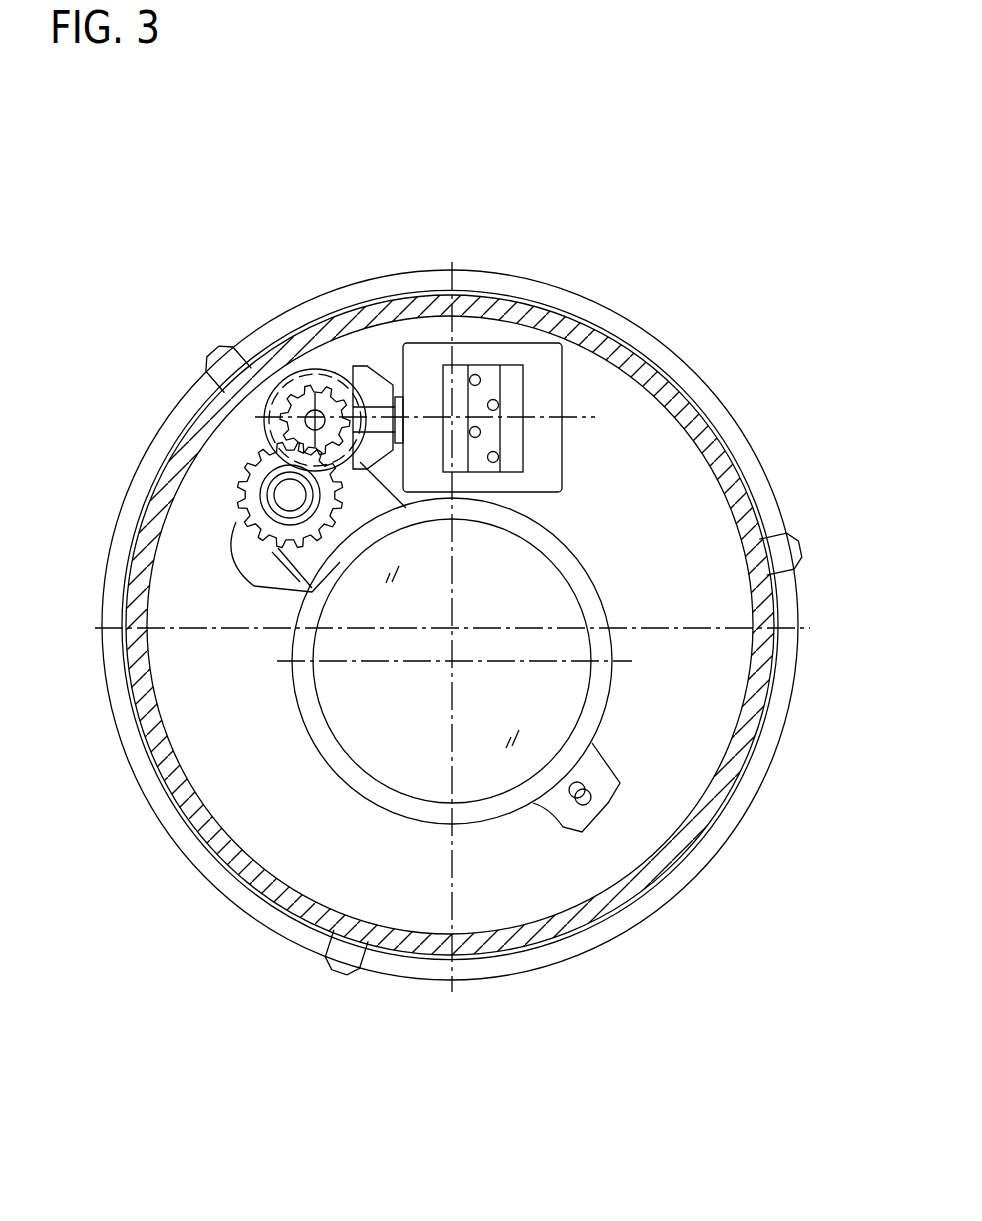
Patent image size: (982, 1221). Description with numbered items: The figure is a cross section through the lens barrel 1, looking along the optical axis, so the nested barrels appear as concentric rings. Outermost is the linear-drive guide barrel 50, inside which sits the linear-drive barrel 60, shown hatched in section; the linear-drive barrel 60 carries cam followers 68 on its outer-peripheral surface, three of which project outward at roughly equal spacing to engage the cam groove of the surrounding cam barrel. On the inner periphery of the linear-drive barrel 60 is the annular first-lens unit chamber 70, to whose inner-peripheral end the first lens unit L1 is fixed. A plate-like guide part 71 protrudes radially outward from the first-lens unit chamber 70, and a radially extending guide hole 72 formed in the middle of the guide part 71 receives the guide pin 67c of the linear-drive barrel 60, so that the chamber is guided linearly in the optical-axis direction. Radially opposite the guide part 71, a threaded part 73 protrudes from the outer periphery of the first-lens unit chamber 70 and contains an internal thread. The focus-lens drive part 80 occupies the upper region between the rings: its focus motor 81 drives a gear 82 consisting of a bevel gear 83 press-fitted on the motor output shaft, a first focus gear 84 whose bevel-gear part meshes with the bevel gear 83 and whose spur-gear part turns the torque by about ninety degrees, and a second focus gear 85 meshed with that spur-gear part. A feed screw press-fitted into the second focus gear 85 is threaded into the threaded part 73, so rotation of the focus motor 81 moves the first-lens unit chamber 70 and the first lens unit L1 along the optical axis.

The lens barrel 1 is at (66, 276).
The linear-drive guide barrel 50 is at (786, 692).
The linear-drive barrel 60 is at (726, 777).
The guide pin 67c is at (593, 810).
The cam followers 68 is at (207, 362).
The first-lens unit chamber 70 is at (411, 771).
The guide part 71 is at (573, 823).
The guide hole 72 is at (600, 807).
The threaded part 73 is at (242, 533).
The focus-lens drive part 80 is at (485, 297).
The focus motor 81 is at (533, 345).
The gear 82 is at (290, 372).
The bevel gear 83 is at (370, 385).
The first focus gear 84 is at (311, 372).
The second focus gear 85 is at (242, 478).
The first lens unit L1 is at (468, 785).